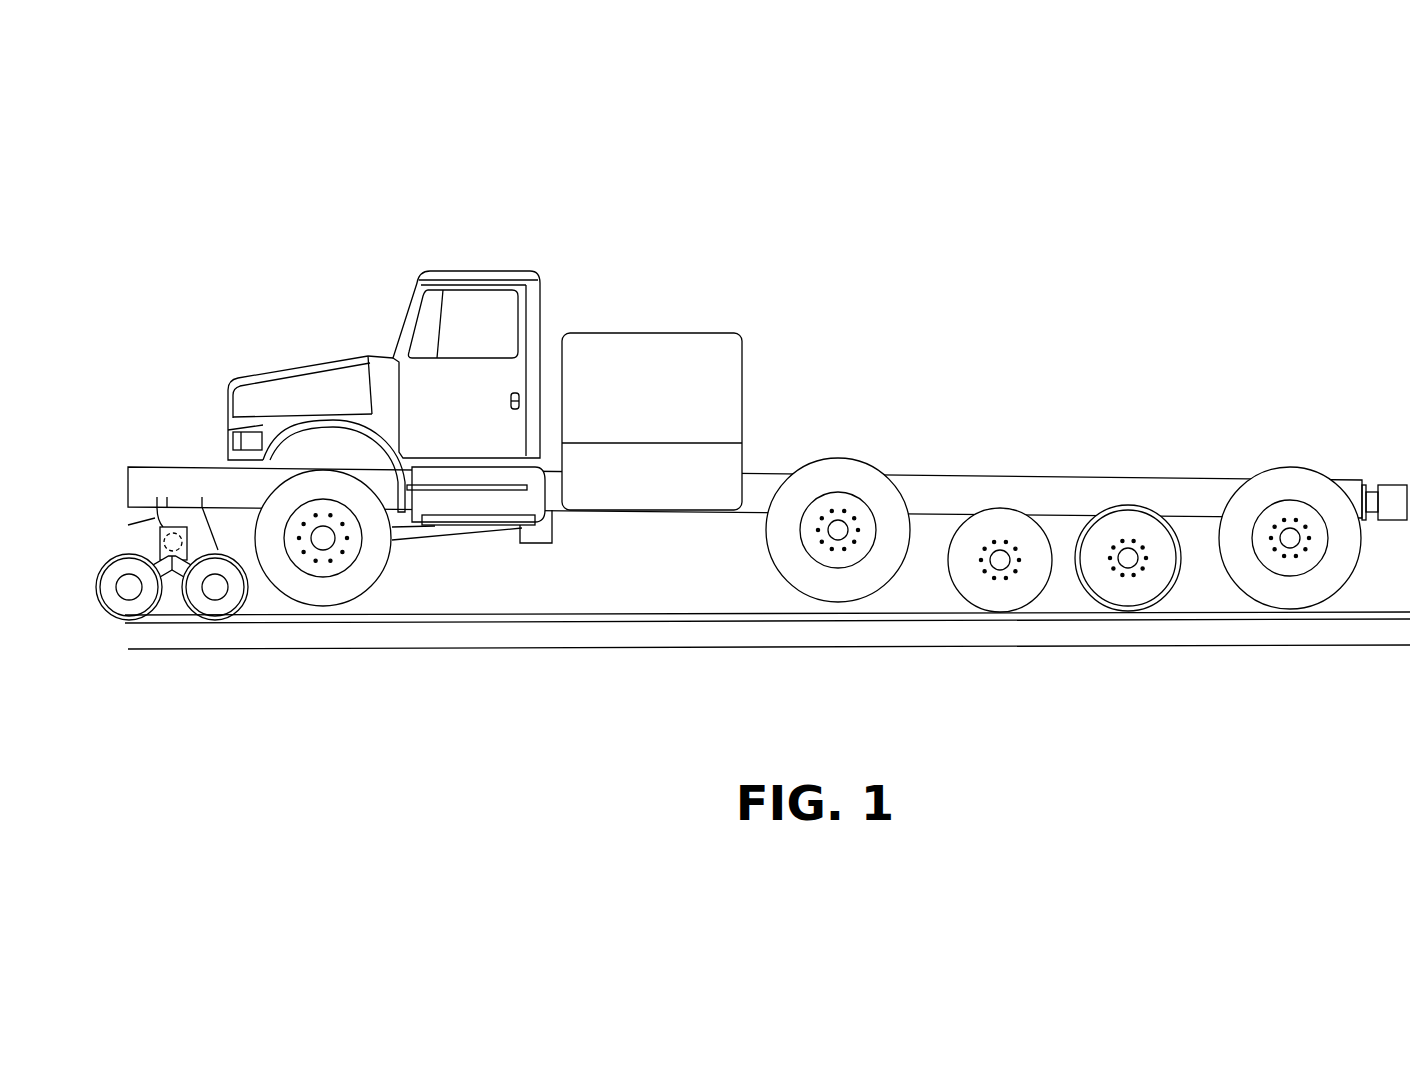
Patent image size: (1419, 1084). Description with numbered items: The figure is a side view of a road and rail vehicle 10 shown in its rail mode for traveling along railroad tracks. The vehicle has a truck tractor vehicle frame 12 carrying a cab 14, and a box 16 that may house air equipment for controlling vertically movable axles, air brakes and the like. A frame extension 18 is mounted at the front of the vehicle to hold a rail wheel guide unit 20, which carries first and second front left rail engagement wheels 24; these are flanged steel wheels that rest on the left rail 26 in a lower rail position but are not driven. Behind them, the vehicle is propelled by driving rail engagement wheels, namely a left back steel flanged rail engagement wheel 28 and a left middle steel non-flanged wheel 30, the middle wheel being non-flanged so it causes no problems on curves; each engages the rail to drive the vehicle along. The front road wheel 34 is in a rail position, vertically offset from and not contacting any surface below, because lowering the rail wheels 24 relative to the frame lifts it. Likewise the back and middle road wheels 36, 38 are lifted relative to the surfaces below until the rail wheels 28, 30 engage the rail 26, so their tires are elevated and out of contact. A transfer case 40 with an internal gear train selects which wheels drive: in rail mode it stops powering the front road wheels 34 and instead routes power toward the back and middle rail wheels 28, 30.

The road and rail vehicle 10 is at (832, 756).
The truck tractor vehicle frame 12 is at (920, 473).
The cab 14 is at (478, 270).
The box 16 is at (657, 333).
The frame extension 18 is at (165, 467).
The rail wheel guide unit 20 is at (170, 598).
The front left rail engagement wheels 24 is at (123, 622).
The left rail 26 is at (308, 638).
The left back rail engagement wheel 28 is at (1110, 612).
The left middle rail wheel 30 is at (990, 600).
The front road wheel 34 is at (362, 585).
The back road wheel 36 is at (1283, 482).
The middle road wheel 38 is at (797, 587).
The transfer case 40 is at (540, 542).